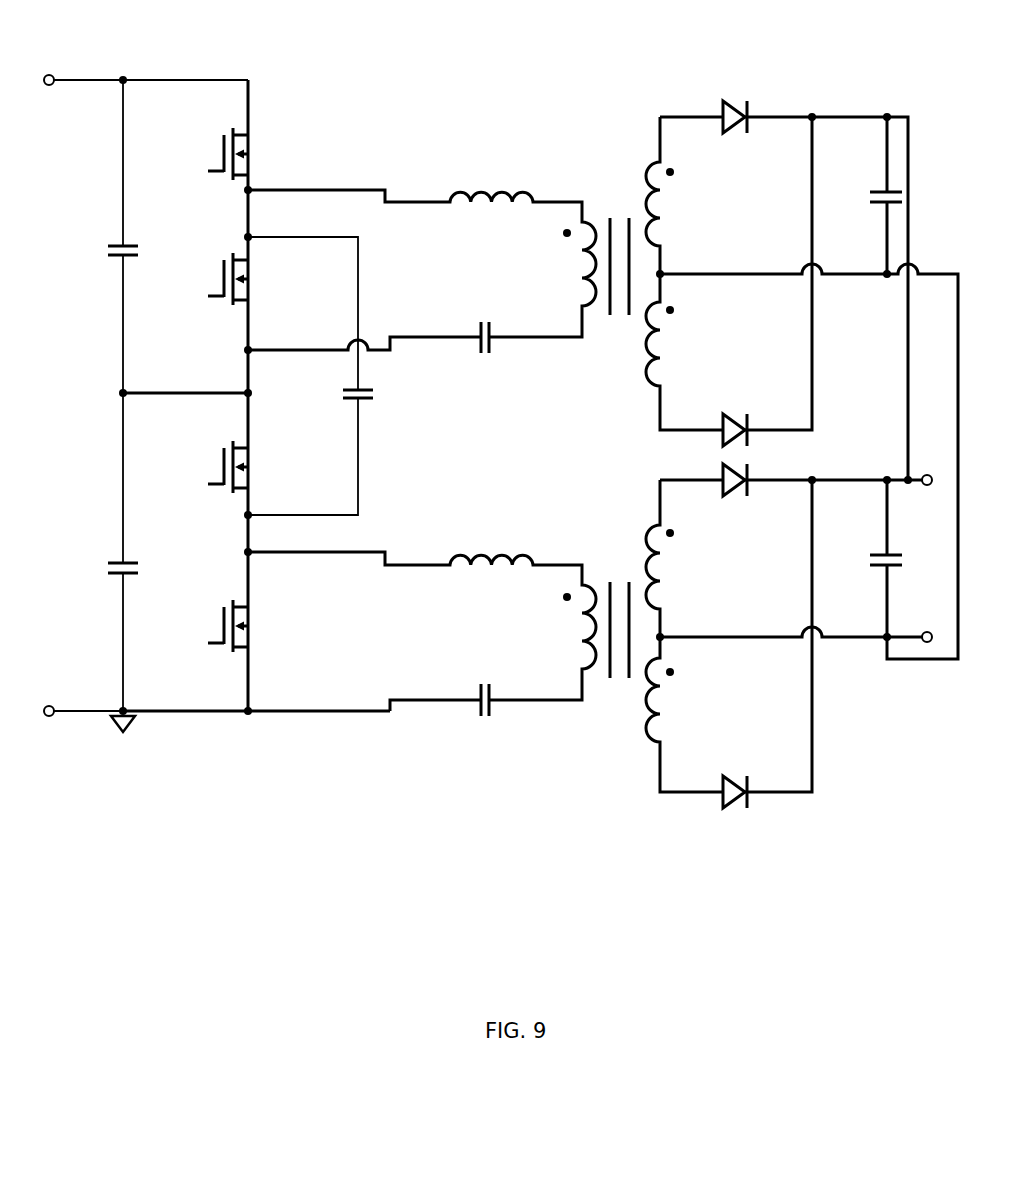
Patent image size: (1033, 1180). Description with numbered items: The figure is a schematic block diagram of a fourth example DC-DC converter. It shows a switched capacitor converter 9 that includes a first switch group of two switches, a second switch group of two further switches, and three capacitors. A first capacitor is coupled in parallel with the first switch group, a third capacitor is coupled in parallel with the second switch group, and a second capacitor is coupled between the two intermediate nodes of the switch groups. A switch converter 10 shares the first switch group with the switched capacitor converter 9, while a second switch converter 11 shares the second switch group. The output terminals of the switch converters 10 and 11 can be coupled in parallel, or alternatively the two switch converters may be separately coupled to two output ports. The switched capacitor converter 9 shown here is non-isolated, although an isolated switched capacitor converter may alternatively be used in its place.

The switched capacitor converter 9 is at (249, 60).
The switch converter 10 is at (538, 146).
The switch converter 11 is at (538, 748).